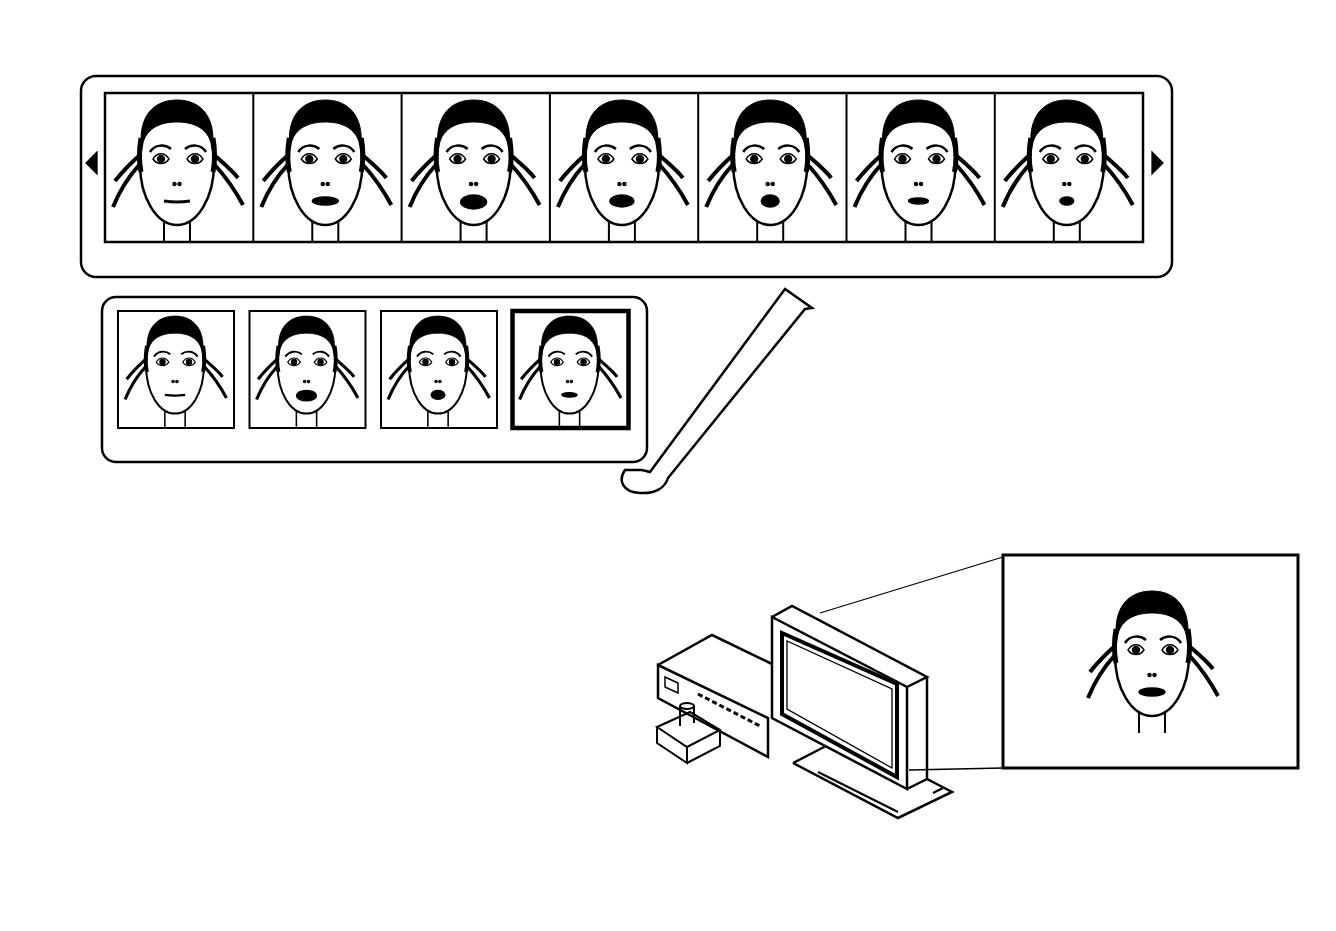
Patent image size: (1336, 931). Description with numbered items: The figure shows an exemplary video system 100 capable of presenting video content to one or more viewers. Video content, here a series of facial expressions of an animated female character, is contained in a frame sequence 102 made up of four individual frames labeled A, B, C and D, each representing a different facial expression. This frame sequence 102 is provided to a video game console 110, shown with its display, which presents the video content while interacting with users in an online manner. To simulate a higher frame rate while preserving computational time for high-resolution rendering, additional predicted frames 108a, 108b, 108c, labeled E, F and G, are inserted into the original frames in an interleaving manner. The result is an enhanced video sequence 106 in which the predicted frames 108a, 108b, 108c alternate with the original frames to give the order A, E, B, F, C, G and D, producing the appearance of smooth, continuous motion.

The video system 100 is at (156, 806).
The frame sequence 102 is at (232, 462).
The enhanced video sequence 106 is at (257, 77).
The predicted frame 108a is at (311, 242).
The predicted frame 108b is at (608, 242).
The predicted frame 108c is at (904, 242).
The video game console 110 is at (718, 772).